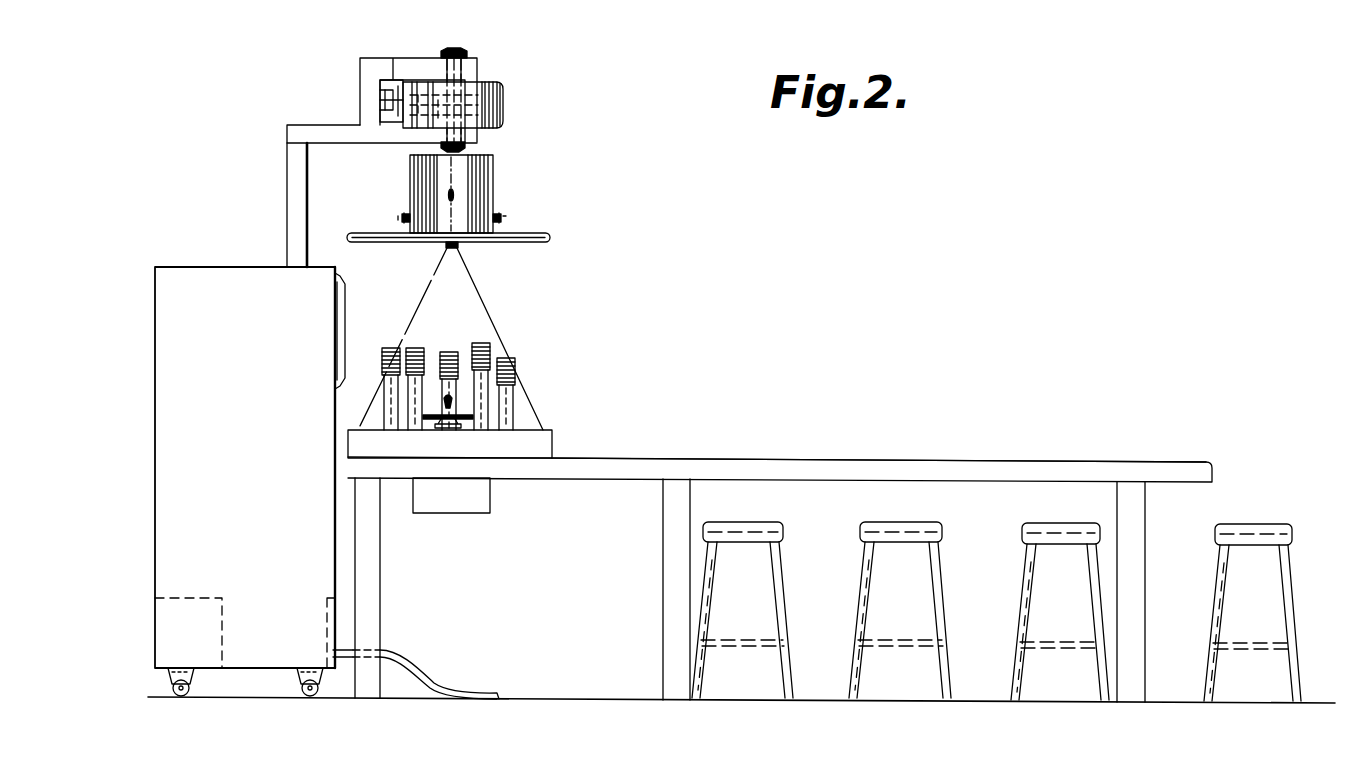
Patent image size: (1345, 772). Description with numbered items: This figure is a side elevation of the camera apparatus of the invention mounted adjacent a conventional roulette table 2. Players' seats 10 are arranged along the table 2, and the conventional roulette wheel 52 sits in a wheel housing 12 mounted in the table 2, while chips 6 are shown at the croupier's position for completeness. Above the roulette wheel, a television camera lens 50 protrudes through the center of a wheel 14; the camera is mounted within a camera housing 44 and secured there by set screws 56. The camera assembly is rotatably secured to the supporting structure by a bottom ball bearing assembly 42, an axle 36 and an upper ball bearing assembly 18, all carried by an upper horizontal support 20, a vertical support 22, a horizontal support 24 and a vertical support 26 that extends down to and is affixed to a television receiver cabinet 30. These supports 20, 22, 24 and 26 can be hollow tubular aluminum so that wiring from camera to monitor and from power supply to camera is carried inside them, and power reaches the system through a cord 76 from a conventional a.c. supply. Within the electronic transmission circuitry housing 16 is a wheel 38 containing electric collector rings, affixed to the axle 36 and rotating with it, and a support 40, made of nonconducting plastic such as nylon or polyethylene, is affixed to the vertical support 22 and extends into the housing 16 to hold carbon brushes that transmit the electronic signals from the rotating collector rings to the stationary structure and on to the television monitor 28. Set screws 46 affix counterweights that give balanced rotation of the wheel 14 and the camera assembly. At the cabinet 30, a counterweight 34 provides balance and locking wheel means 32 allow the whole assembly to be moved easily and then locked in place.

The roulette table 2 is at (990, 428).
The chips 6 is at (515, 370).
The players' seats 10 is at (760, 532).
The wheel housing 12 is at (545, 445).
The wheel 14 is at (548, 236).
The electronic transmission circuitry housing 16 is at (498, 88).
The upper ball bearing assembly 18 is at (458, 52).
The upper horizontal support 20 is at (410, 72).
The vertical support 22 is at (380, 96).
The horizontal support 24 is at (364, 132).
The vertical support 26 is at (298, 205).
The television monitor 28 is at (347, 306).
The television receiver cabinet 30 is at (224, 278).
The locking wheel means 32 is at (303, 690).
The counterweight 34 is at (208, 620).
The axle 36 is at (478, 50).
The electrical signal collector ring wheel 38 is at (504, 108).
The support 40 is at (393, 90).
The bottom ball bearing assembly 42 is at (465, 147).
The camera housing 44 is at (428, 186).
The set screws 46 is at (402, 218).
The television camera lens 50 is at (458, 248).
The roulette wheel 52 is at (452, 405).
The set screws 56 is at (455, 193).
The cord 76 is at (420, 688).